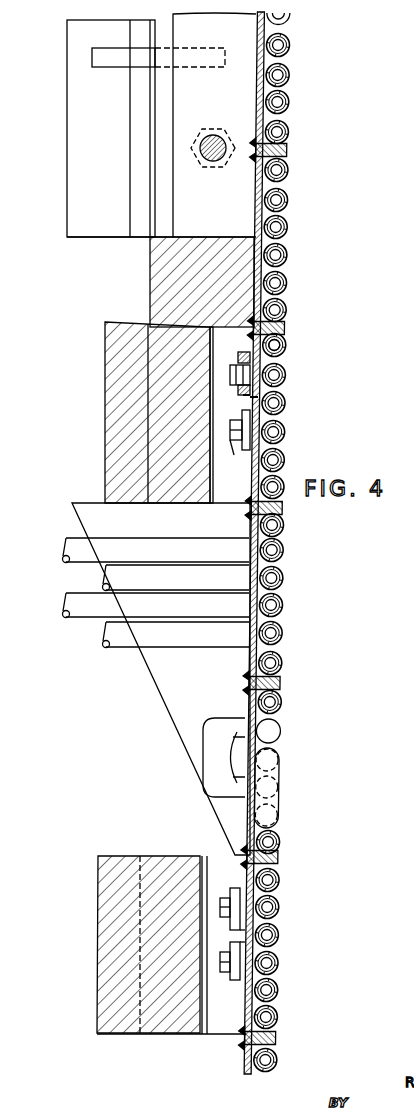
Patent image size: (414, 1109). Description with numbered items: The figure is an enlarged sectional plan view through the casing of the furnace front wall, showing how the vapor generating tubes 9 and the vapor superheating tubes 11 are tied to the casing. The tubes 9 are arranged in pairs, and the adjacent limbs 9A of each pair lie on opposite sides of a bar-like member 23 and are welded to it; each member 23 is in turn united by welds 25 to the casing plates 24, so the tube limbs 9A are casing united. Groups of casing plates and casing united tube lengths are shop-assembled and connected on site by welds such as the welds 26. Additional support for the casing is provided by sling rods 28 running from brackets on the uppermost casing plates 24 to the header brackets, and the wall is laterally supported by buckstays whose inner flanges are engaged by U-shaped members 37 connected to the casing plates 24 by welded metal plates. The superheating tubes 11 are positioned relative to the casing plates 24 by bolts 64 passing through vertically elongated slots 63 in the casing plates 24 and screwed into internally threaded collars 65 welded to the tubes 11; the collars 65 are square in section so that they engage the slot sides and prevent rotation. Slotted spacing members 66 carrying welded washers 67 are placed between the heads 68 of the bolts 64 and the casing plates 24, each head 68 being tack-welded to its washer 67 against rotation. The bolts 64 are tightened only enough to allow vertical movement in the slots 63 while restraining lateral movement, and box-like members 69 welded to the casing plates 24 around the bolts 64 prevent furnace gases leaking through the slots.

The tubes 9 is at (268, 807).
The limbs 9A is at (289, 133).
The vapor superheating tubes 11 is at (290, 47).
The bar-like member 23 is at (287, 152).
The casing plates 24 is at (255, 93).
The welds 25 is at (255, 144).
The welds 26 is at (252, 239).
The sling rods 28 is at (208, 163).
The U-shaped members 37 is at (104, 128).
The vertically elongated slots 63 is at (272, 347).
The bolts 64 is at (241, 356).
The internally threaded collars 65 is at (262, 377).
The spacing members 66 is at (261, 397).
The washers 67 is at (243, 396).
The heads 68 is at (257, 377).
The box-like members 69 is at (224, 415).